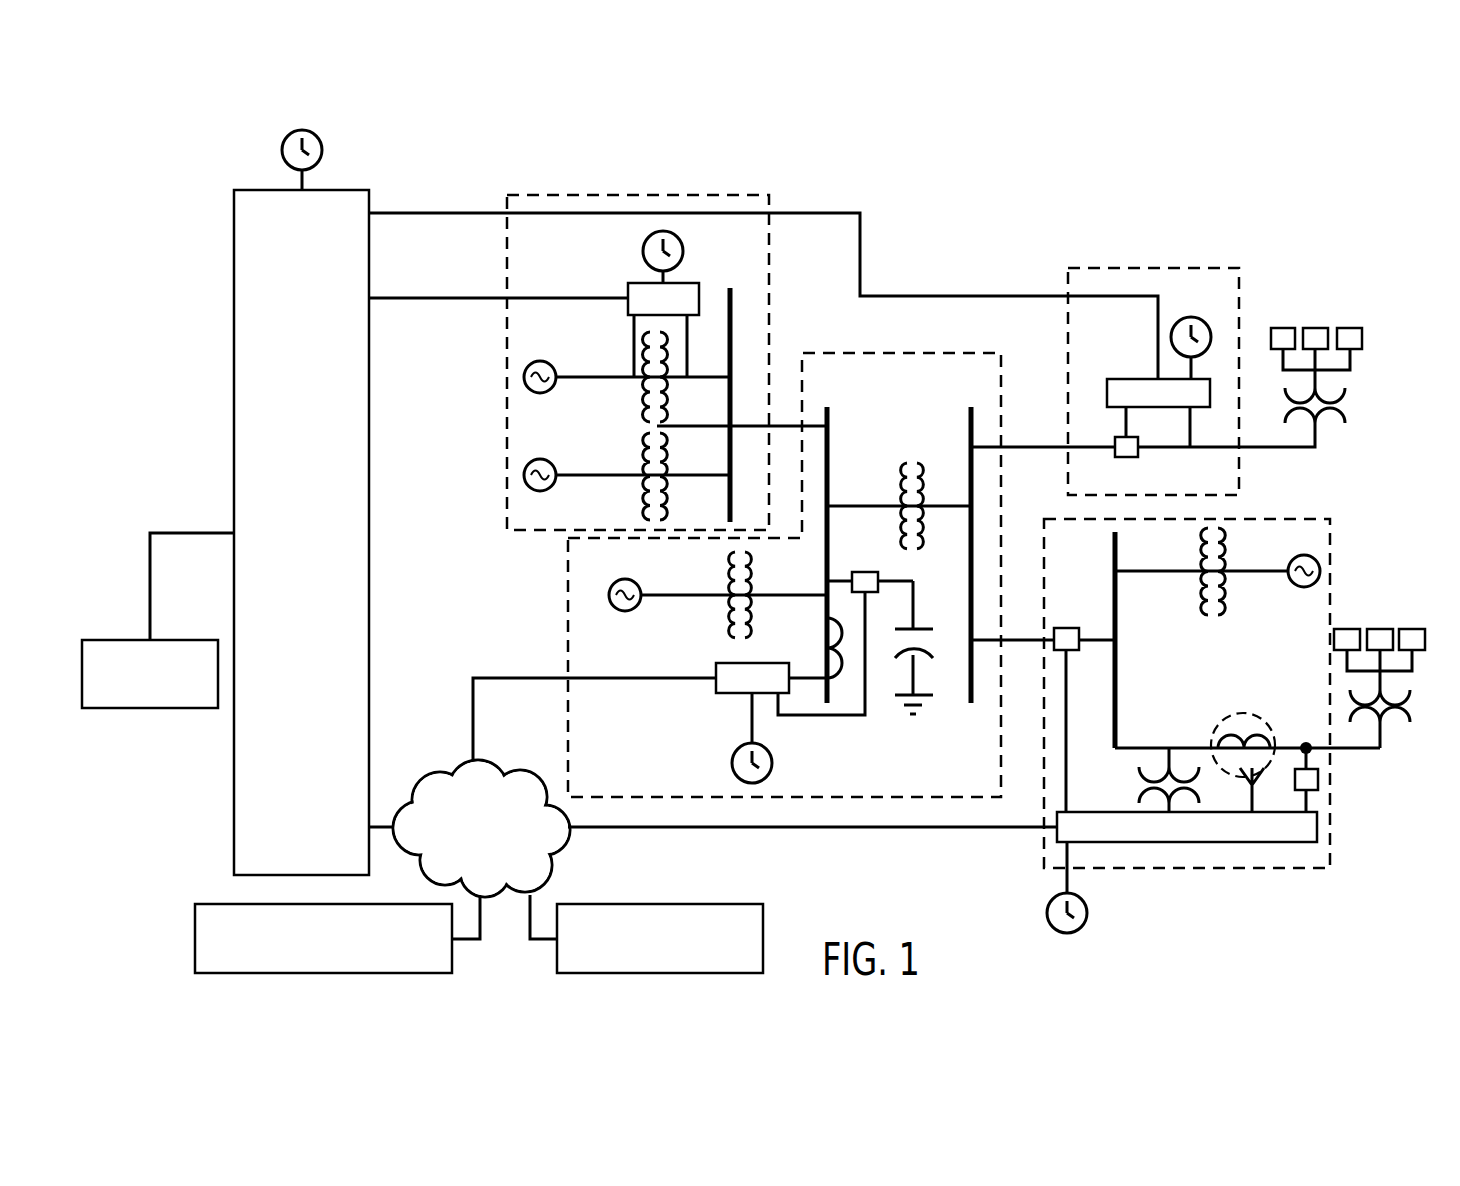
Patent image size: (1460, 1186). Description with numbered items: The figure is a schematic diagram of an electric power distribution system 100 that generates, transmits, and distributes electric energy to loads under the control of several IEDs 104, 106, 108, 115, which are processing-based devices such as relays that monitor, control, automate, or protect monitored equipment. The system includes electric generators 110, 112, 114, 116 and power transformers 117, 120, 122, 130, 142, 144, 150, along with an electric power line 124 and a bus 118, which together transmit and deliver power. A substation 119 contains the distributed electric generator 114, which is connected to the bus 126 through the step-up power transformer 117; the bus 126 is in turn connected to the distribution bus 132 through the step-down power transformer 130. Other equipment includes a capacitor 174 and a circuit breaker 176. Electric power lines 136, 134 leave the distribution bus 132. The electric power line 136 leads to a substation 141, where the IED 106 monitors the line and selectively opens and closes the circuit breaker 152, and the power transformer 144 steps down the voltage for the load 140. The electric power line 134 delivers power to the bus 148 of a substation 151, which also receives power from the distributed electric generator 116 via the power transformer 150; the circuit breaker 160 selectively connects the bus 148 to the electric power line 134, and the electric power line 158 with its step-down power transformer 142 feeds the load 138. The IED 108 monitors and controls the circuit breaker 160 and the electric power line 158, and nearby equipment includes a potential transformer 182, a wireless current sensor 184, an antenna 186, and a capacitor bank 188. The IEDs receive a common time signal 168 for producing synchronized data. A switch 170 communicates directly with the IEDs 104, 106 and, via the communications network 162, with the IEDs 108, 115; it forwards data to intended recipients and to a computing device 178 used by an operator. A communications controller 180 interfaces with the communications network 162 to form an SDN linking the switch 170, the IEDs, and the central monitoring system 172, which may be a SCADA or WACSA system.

The electric power distribution system 100 is at (1322, 182).
The IED 104 is at (634, 283).
The IED 106 is at (1120, 379).
The IED 108 is at (1243, 842).
The electric generator 110 is at (541, 361).
The electric generator 112 is at (541, 460).
The electric generator 114 is at (628, 579).
The IED 115 is at (757, 663).
The electric generator 116 is at (1293, 587).
The power transformer 117 is at (727, 626).
The bus 118 is at (733, 292).
The substation 119 is at (568, 626).
The power transformer 120 is at (643, 412).
The power transformer 122 is at (643, 506).
The electric power line 124 is at (780, 427).
The bus 126 is at (830, 435).
The power transformer 130 is at (905, 464).
The distribution bus 132 is at (968, 700).
The electric power line 134 is at (1010, 643).
The electric power line 136 is at (1095, 449).
The load 138 is at (1380, 628).
The load 140 is at (1350, 328).
The substation 141 is at (1090, 268).
The power transformer 142 is at (1403, 713).
The power transformer 144 is at (1345, 413).
The bus 148 is at (1112, 534).
The power transformer 150 is at (1218, 528).
The substation 151 is at (1308, 868).
The circuit breaker 152 is at (1122, 458).
The electric power line 158 is at (1352, 750).
The circuit breaker 160 is at (1078, 628).
The communications network 162 is at (432, 772).
The common time signal 168 is at (322, 150).
The switch 170 is at (369, 533).
The central monitoring system 172 is at (195, 932).
The capacitor 174 is at (928, 628).
The circuit breaker 176 is at (857, 572).
The computing device 178 is at (150, 708).
The communications controller 180 is at (640, 904).
The potential transformer 182 is at (1140, 783).
The wireless current sensor 184 is at (1243, 714).
The antenna 186 is at (1265, 778).
The capacitor bank 188 is at (1318, 779).